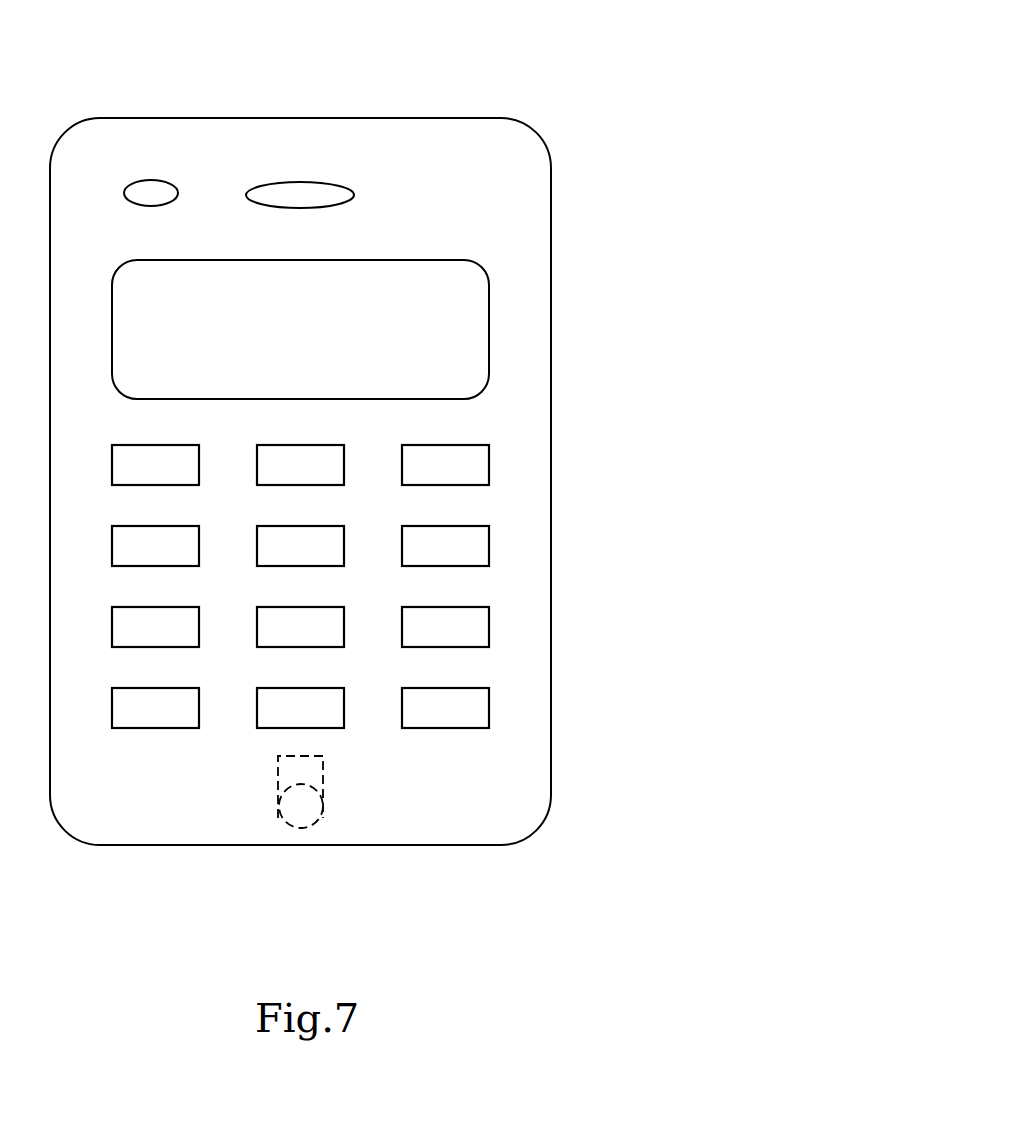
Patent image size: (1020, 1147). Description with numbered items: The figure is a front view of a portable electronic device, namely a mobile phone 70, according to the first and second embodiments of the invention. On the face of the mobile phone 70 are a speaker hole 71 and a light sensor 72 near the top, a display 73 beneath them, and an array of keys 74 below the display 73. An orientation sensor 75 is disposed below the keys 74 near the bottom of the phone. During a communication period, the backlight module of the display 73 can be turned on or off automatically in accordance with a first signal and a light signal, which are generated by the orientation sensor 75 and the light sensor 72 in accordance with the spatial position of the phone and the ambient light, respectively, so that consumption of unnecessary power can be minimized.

The mobile phone 70 is at (583, 84).
The speaker hole 71 is at (301, 182).
The light sensor 72 is at (153, 180).
The display 73 is at (480, 313).
The keys 74 is at (491, 465).
The orientation sensor 75 is at (301, 829).